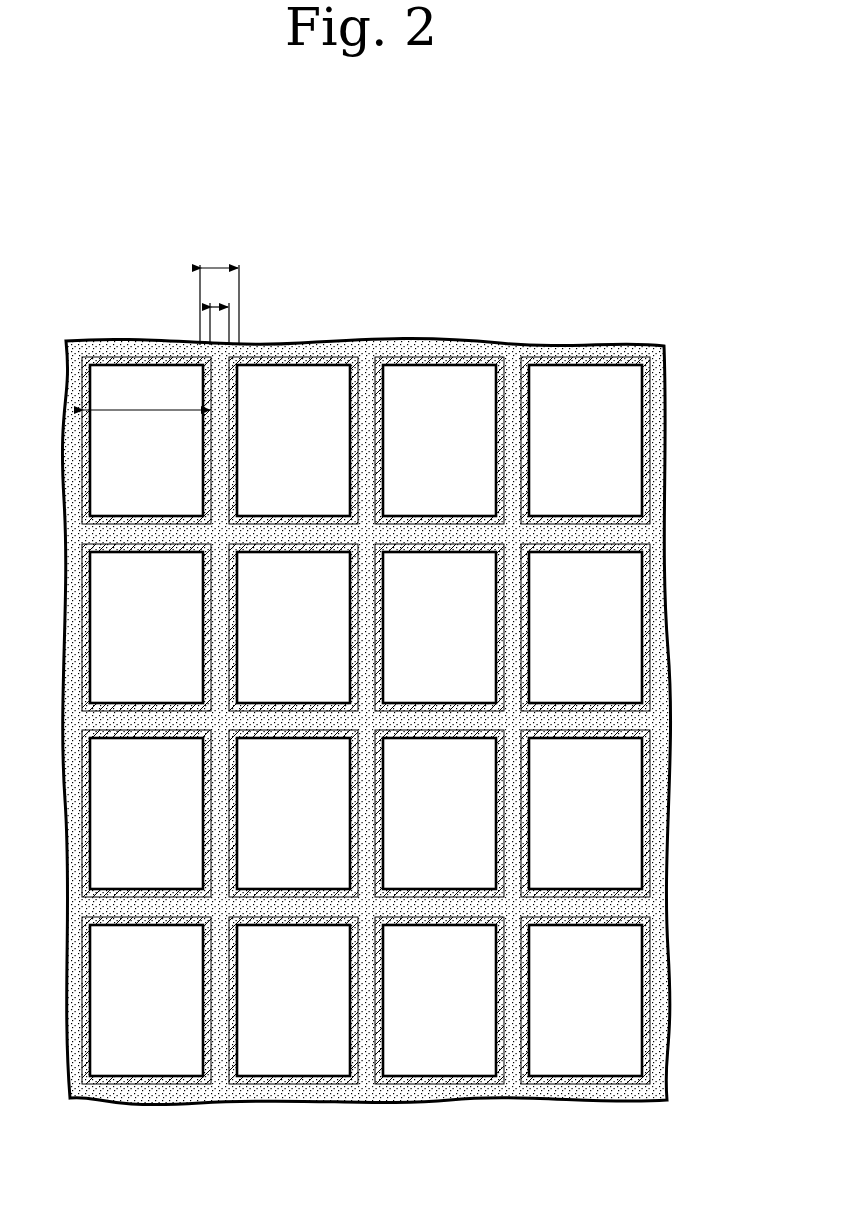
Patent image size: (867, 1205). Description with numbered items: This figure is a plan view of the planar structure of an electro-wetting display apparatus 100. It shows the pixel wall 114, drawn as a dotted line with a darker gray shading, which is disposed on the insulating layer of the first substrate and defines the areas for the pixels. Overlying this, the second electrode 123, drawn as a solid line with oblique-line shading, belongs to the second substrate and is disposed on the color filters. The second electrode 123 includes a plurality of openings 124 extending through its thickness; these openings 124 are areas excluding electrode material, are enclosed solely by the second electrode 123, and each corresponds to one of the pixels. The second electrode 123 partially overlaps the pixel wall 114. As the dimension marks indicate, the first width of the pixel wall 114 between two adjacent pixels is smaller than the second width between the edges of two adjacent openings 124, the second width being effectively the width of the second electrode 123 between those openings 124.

The electro-wetting display apparatus 100 is at (99, 257).
The pixel wall 114 is at (657, 533).
The second electrode 123 is at (563, 362).
The openings 124 is at (616, 447).